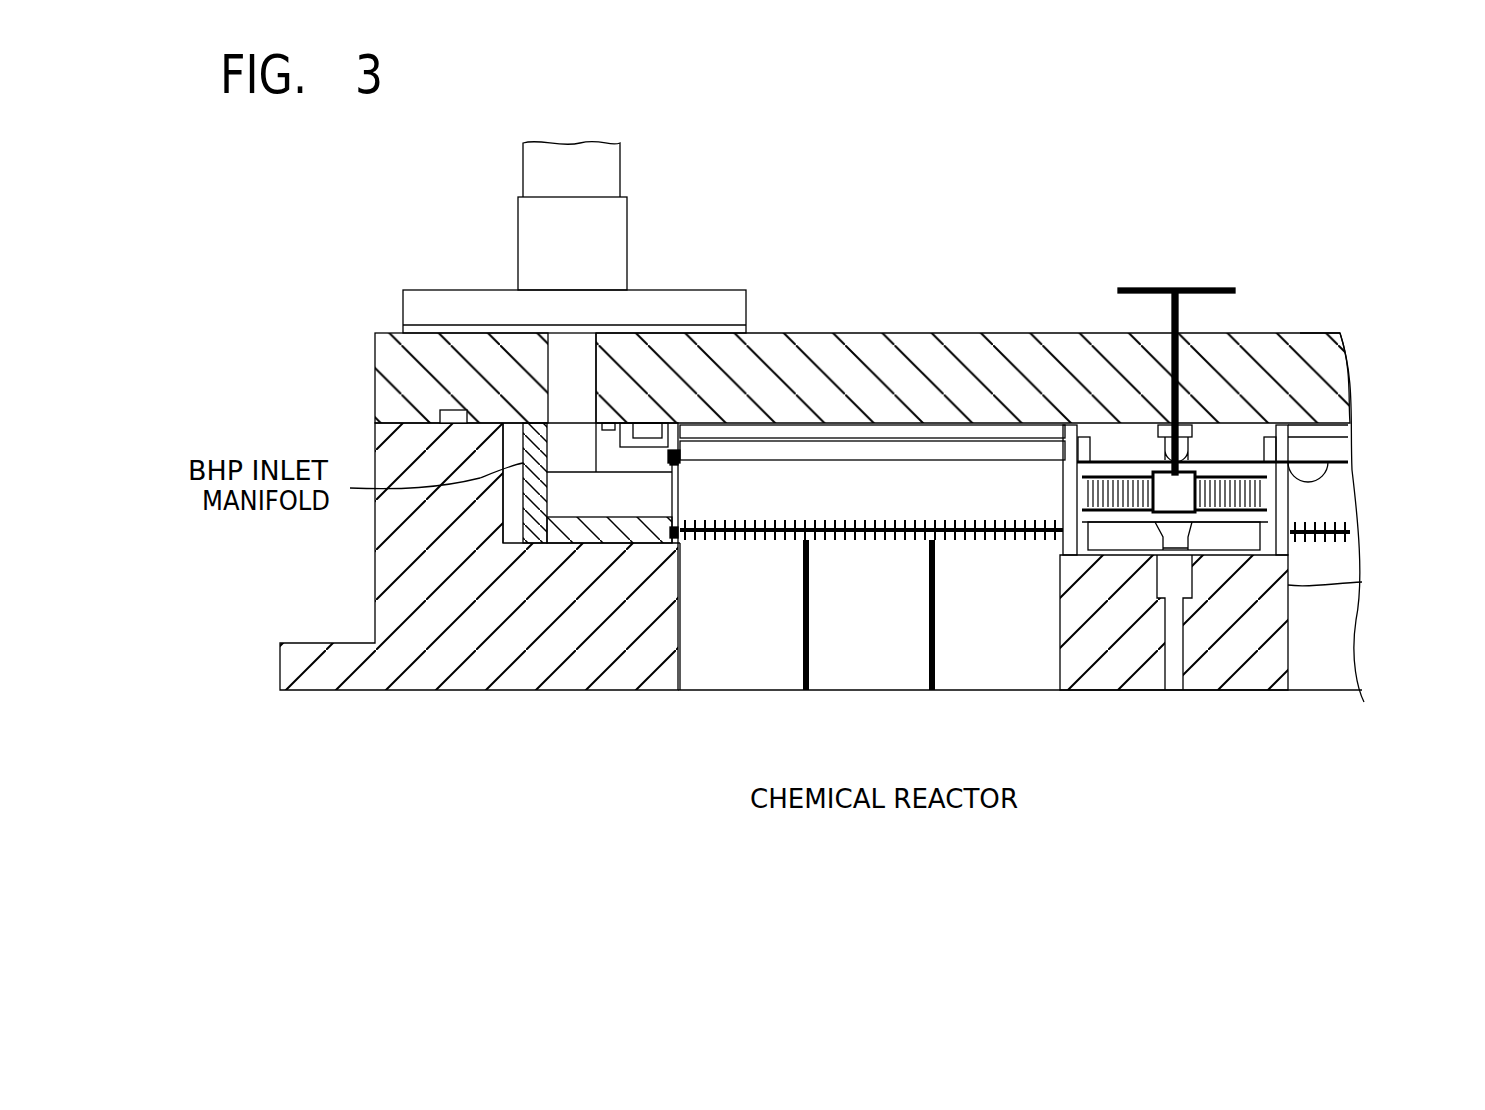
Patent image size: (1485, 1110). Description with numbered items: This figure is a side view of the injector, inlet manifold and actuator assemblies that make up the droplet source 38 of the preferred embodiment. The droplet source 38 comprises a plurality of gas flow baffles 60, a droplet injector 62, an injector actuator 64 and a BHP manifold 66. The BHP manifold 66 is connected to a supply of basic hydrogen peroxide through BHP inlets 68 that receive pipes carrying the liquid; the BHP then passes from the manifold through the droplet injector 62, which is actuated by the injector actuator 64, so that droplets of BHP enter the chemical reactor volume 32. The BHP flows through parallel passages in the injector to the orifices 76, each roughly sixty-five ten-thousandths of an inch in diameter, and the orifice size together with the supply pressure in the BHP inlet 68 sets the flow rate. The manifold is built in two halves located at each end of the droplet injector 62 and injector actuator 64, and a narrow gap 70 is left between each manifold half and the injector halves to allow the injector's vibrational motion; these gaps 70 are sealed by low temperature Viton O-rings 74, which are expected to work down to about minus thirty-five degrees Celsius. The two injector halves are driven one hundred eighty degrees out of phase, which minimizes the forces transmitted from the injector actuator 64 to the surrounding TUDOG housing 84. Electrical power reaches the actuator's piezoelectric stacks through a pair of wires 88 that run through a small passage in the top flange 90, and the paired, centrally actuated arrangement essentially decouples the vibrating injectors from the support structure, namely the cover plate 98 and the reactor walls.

The droplet source 38 is at (1230, 186).
The chemical reactor volume 32 is at (780, 542).
The gas flow baffles 60 is at (809, 597).
The droplet injector 62 is at (1112, 457).
The injector actuator 64 is at (1207, 460).
The BHP manifold 66 is at (837, 470).
The BHP inlets 68 is at (620, 173).
The narrow gap 70 is at (1087, 457).
The low temperature Viton O-rings 74 is at (1278, 437).
The orifices 76 is at (760, 522).
The TUDOG housing 84 is at (990, 433).
The wires 88 is at (1218, 290).
The top flange 90 is at (765, 333).
The cover plate 98 is at (1318, 333).